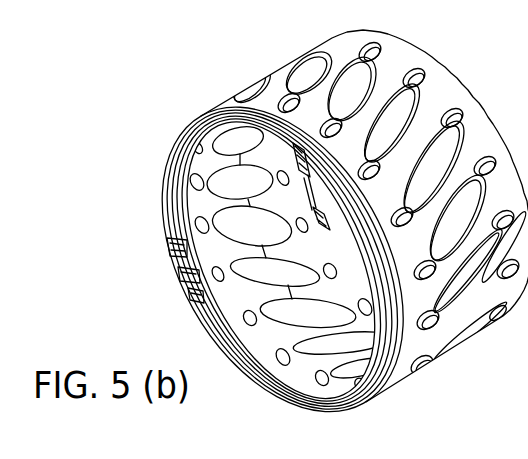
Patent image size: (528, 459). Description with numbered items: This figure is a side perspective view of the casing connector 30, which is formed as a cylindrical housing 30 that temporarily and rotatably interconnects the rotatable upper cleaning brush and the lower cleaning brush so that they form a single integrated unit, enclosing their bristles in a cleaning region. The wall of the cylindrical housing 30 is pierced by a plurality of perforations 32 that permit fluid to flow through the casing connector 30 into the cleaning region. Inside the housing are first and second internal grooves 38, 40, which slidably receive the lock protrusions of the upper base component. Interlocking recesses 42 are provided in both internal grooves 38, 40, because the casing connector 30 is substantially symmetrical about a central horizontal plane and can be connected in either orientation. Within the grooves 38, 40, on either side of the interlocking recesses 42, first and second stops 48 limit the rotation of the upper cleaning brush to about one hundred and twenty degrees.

The casing connector 30 is at (168, 124).
The perforations 32 is at (472, 283).
The first internal groove 38 is at (165, 233).
The second internal groove 40 is at (338, 230).
The interlocking recesses 42 is at (173, 269).
The stops 48 is at (191, 291).